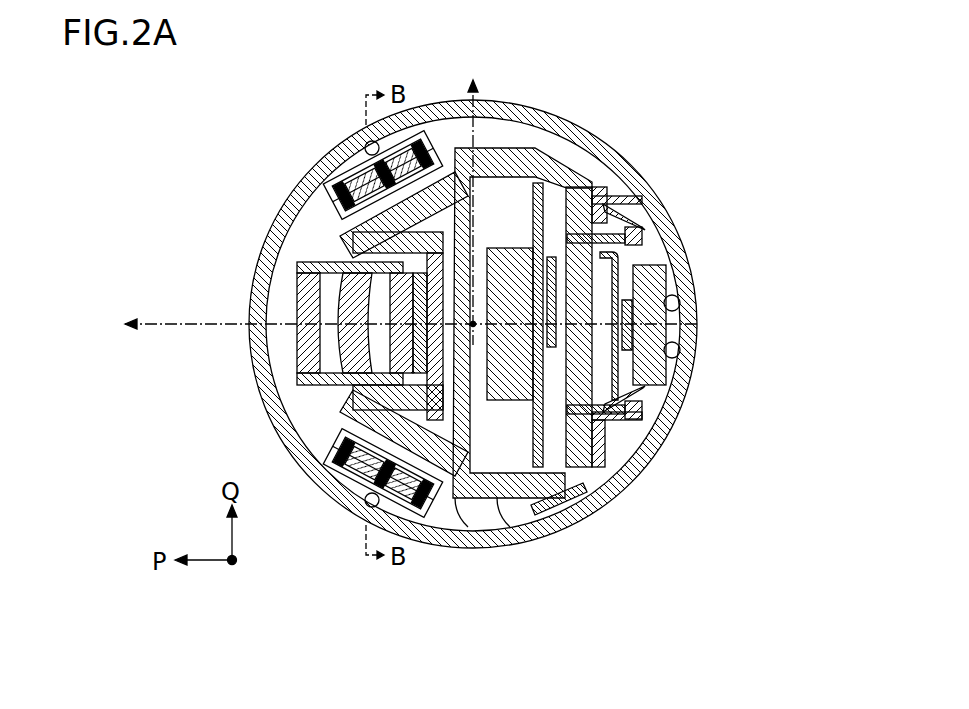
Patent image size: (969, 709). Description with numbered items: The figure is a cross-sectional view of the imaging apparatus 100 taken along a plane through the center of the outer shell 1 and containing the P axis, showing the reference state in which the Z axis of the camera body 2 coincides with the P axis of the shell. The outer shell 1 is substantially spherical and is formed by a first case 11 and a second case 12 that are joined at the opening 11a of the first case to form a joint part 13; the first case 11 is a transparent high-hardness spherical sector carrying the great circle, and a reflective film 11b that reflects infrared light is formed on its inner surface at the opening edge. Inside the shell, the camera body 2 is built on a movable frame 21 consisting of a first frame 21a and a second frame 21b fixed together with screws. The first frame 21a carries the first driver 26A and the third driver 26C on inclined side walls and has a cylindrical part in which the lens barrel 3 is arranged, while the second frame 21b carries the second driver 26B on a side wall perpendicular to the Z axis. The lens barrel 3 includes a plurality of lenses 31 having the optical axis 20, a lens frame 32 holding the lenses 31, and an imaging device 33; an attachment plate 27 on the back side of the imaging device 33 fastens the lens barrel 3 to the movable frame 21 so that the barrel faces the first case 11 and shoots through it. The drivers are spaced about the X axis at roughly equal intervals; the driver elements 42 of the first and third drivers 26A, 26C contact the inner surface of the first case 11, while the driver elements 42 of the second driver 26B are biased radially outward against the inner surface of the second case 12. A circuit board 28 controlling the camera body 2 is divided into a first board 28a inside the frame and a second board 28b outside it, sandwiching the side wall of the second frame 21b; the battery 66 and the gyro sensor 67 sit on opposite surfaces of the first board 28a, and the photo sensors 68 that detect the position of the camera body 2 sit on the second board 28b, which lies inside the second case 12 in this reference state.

The imaging apparatus 100 is at (745, 128).
The outer shell 1 is at (250, 372).
The camera body 2 is at (327, 412).
The lens barrel 3 is at (300, 396).
The first case 11 is at (262, 212).
The opening 11a is at (580, 500).
The reflective film 11b is at (505, 520).
The second case 12 is at (635, 198).
The joint part 13 is at (585, 170).
The optical axis 20 is at (160, 345).
The movable frame 21 is at (535, 585).
The first frame 21a is at (458, 500).
The second frame 21b is at (500, 500).
The first driver 26A is at (345, 163).
The second driver 26B is at (680, 368).
The third driver 26C is at (340, 498).
The attachment plate 27 is at (490, 248).
The circuit board 28 is at (668, 550).
The first board 28a is at (615, 430).
The second board 28b is at (605, 425).
The lenses 31 is at (402, 300).
The lens frame 32 is at (297, 265).
The imaging device 33 is at (355, 298).
The driver elements 42 is at (367, 142).
The battery 66 is at (538, 183).
The gyro sensor 67 is at (580, 240).
The photo sensors 68 is at (645, 232).